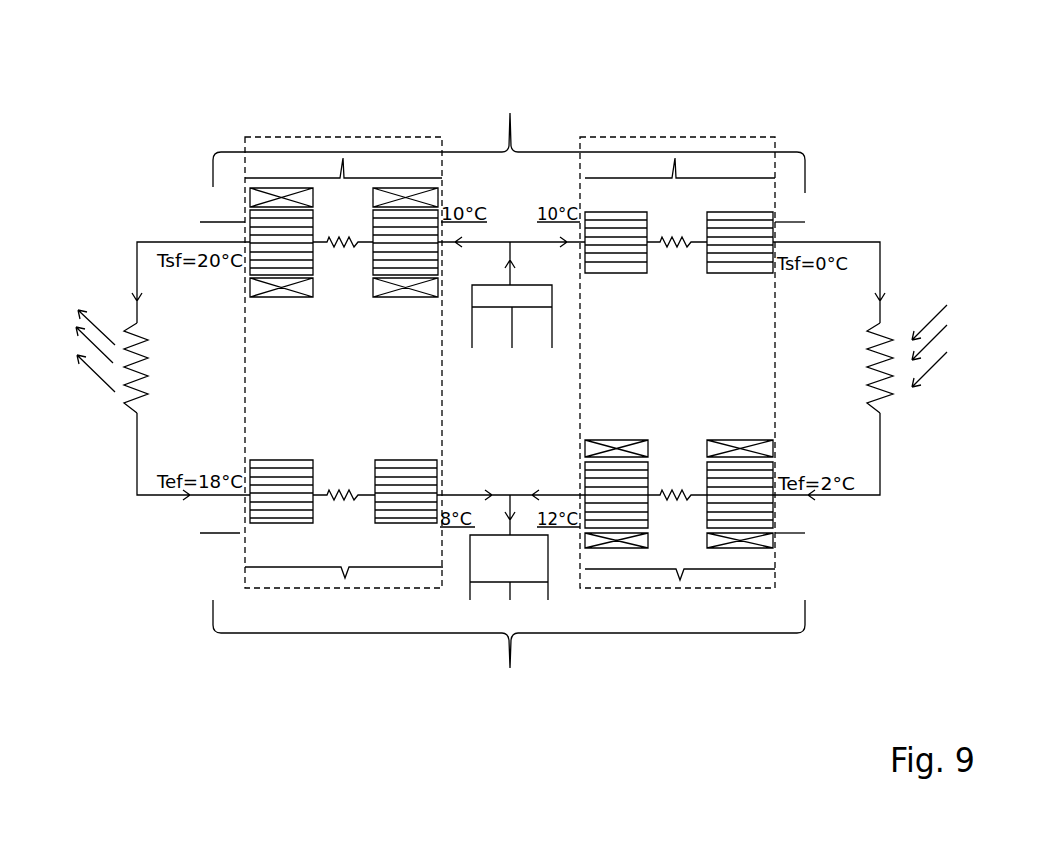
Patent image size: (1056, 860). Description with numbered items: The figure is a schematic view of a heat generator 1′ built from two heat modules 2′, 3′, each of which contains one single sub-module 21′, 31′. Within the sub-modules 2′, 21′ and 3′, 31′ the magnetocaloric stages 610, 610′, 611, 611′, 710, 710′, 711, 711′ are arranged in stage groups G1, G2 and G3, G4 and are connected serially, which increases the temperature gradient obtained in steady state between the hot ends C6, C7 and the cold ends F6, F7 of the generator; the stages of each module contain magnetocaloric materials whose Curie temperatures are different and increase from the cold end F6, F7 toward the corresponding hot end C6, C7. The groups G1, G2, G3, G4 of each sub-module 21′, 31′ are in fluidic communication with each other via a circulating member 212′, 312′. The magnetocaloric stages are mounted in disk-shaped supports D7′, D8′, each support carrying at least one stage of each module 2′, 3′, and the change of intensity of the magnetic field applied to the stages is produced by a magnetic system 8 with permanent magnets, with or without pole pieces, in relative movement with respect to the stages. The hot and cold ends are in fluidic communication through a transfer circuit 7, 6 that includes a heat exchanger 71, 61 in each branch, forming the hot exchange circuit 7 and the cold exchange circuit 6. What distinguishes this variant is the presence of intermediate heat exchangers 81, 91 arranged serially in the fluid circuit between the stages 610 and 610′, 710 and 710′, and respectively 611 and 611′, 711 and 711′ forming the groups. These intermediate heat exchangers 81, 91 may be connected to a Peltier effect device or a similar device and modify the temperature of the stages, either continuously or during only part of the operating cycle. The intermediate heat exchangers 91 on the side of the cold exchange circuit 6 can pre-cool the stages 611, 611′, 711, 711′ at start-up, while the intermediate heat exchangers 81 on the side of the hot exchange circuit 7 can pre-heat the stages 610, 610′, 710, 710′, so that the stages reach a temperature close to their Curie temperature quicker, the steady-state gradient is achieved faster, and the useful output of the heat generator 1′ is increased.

The heat generator 1′ is at (999, 129).
The heat module 2′ is at (509, 140).
The sub-module 21′ is at (511, 261).
The circulating member 212′ is at (564, 328).
The heat module 3′ is at (509, 651).
The sub-module 31′ is at (511, 512).
The circulating member 312′ is at (564, 571).
The cold exchange circuit 6 is at (900, 257).
The heat exchanger 61 is at (882, 408).
The hot exchange circuit 7 is at (121, 267).
The heat exchanger 71 is at (137, 412).
The magnetic system 8 is at (294, 250).
The intermediate heat exchanger 81 is at (341, 240).
The intermediate heat exchanger 91 is at (677, 243).
The magnetocaloric stage 610 is at (283, 263).
The magnetocaloric stage 610′ is at (388, 263).
The magnetocaloric stage 611 is at (630, 265).
The magnetocaloric stage 611′ is at (717, 277).
The magnetocaloric stage 710 is at (282, 480).
The magnetocaloric stage 710′ is at (398, 480).
The magnetocaloric stage 711 is at (597, 480).
The magnetocaloric stage 711′ is at (720, 480).
The hot end C6 is at (250, 232).
The hot end C7 is at (250, 503).
The cold end F6 is at (775, 228).
The cold end F7 is at (775, 502).
The disk-shaped support D7′ is at (302, 137).
The disk-shaped support D8′ is at (625, 137).
The stage group G1 is at (343, 151).
The stage group G2 is at (680, 152).
The stage group G3 is at (344, 594).
The stage group G4 is at (680, 595).